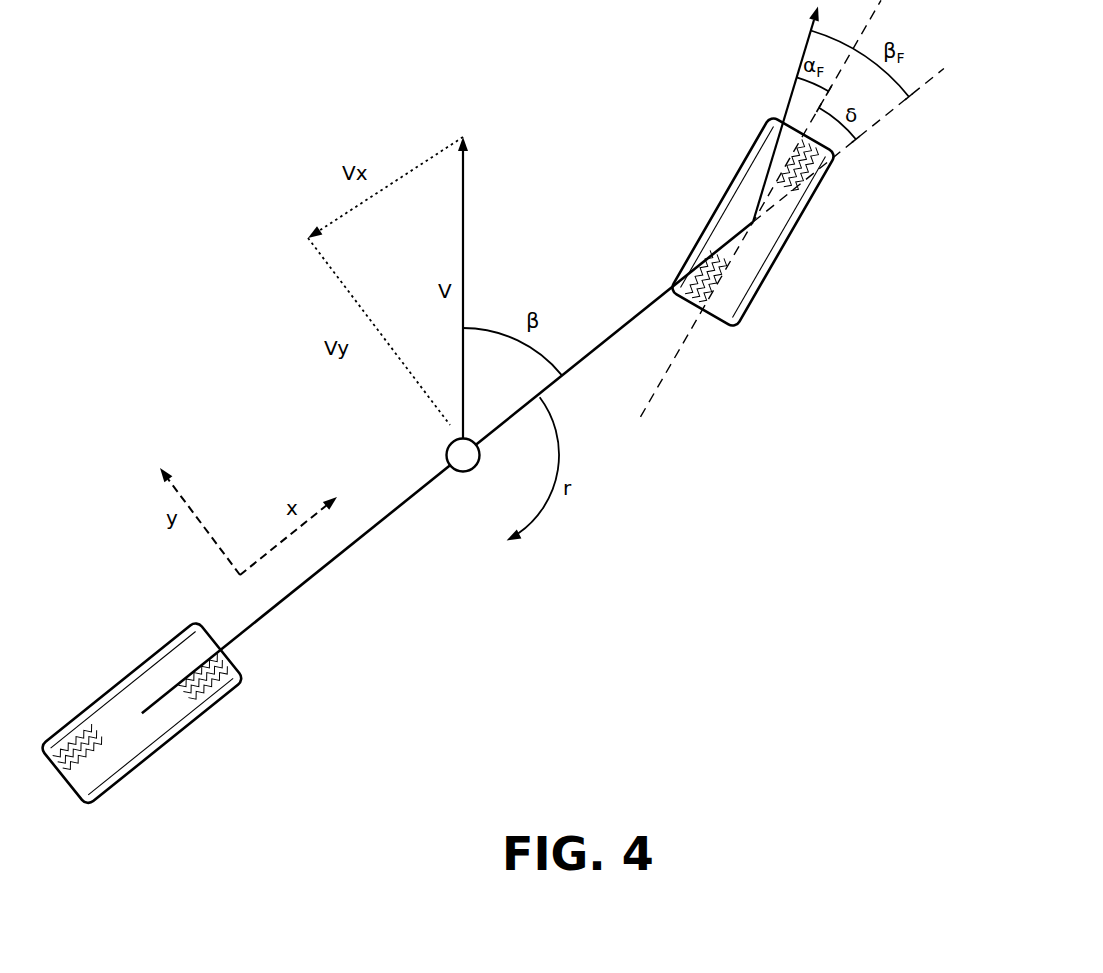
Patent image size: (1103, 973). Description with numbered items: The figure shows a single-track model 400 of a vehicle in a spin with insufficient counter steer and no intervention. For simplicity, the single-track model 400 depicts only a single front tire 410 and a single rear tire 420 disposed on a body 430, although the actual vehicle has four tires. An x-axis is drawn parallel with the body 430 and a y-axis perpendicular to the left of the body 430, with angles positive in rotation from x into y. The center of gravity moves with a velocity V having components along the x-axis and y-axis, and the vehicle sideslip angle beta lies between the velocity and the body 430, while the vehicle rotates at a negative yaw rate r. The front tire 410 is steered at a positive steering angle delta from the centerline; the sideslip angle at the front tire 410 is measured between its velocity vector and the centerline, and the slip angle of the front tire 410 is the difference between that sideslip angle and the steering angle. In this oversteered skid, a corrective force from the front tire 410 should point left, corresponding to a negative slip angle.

The single-track model 400 is at (709, 613).
The front tire 410 is at (715, 198).
The rear tire 420 is at (120, 680).
The body 430 is at (293, 590).